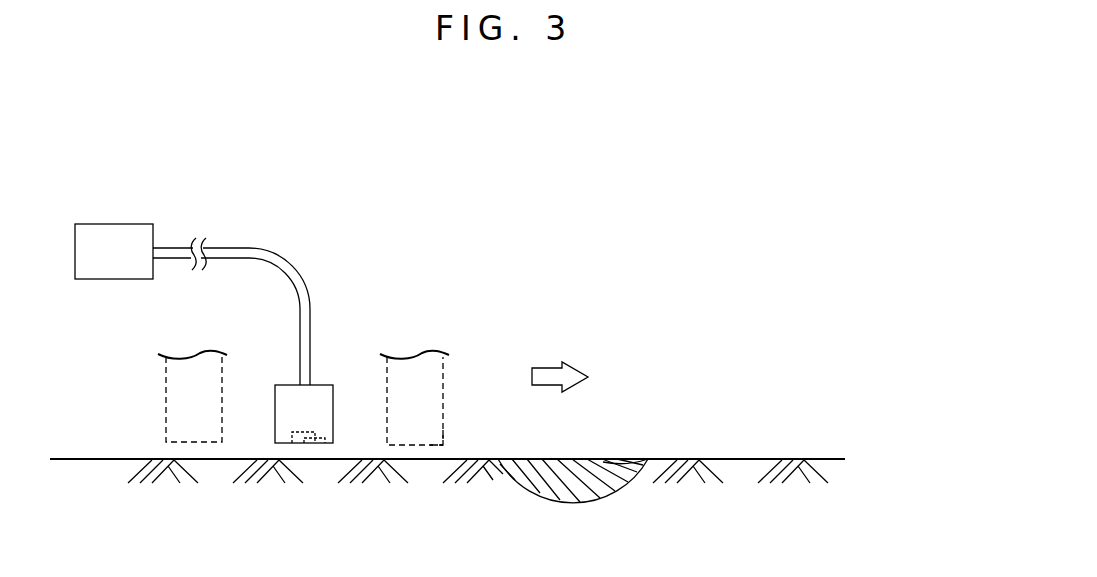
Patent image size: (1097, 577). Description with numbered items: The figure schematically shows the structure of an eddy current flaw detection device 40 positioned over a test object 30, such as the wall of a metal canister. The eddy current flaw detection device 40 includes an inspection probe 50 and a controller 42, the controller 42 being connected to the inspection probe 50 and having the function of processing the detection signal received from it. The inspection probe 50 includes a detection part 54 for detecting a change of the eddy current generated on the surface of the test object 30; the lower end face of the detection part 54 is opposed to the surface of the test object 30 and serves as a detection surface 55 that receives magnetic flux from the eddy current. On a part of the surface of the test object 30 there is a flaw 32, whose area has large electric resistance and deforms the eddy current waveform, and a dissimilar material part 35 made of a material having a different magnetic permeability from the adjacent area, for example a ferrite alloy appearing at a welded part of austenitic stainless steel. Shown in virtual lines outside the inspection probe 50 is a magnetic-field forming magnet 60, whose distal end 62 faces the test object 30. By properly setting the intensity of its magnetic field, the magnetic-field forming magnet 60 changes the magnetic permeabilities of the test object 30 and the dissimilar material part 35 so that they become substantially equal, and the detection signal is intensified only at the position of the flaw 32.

The test object 30 is at (737, 458).
The flaw 32 is at (587, 452).
The dissimilar material part 35 is at (606, 465).
The eddy current flaw detection device 40 is at (287, 218).
The controller 42 is at (115, 224).
The inspection probe 50 is at (322, 384).
The detection part 54 is at (275, 440).
The detection surface 55 is at (310, 445).
The magnetic-field forming magnet 60 is at (166, 377).
The distal end 62 is at (433, 447).